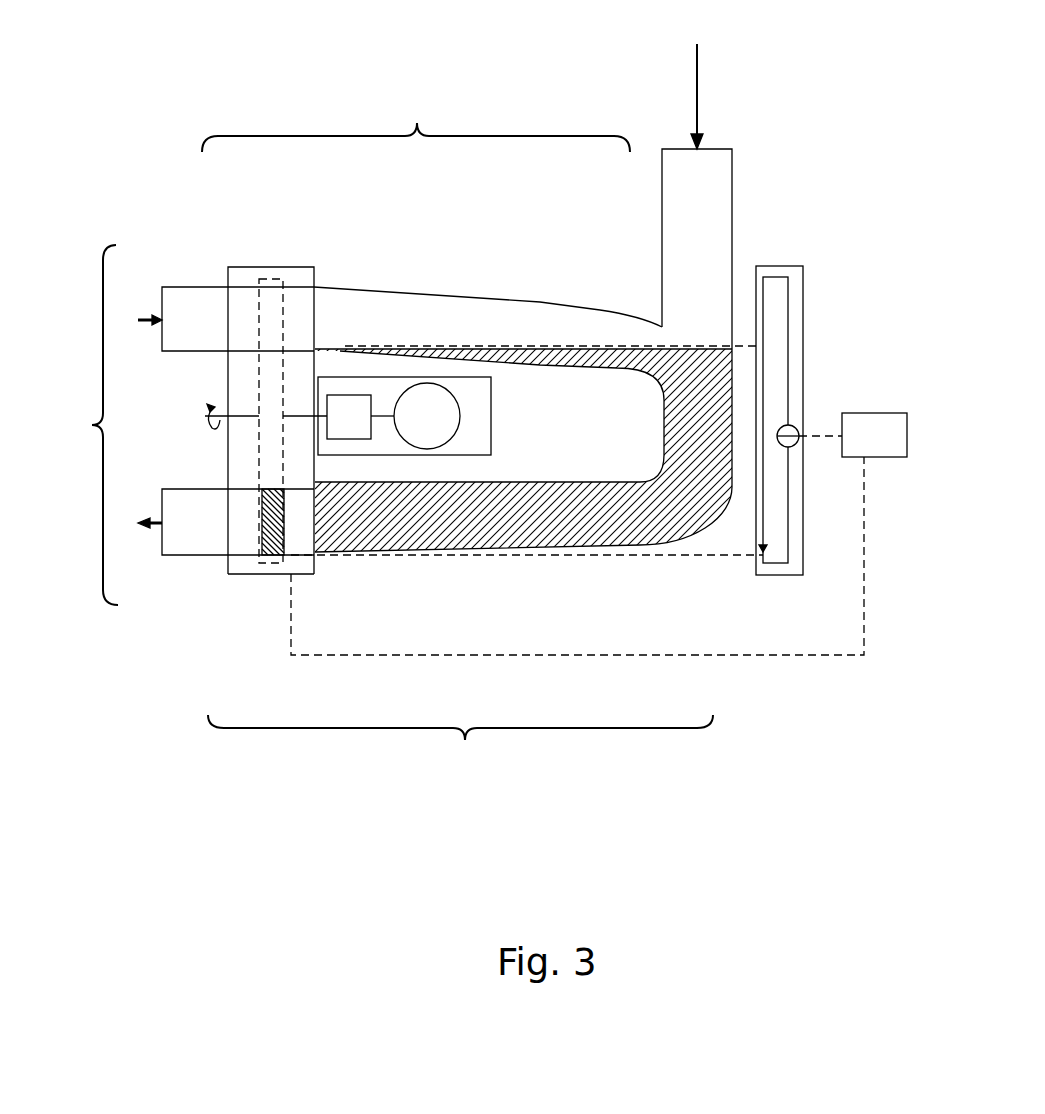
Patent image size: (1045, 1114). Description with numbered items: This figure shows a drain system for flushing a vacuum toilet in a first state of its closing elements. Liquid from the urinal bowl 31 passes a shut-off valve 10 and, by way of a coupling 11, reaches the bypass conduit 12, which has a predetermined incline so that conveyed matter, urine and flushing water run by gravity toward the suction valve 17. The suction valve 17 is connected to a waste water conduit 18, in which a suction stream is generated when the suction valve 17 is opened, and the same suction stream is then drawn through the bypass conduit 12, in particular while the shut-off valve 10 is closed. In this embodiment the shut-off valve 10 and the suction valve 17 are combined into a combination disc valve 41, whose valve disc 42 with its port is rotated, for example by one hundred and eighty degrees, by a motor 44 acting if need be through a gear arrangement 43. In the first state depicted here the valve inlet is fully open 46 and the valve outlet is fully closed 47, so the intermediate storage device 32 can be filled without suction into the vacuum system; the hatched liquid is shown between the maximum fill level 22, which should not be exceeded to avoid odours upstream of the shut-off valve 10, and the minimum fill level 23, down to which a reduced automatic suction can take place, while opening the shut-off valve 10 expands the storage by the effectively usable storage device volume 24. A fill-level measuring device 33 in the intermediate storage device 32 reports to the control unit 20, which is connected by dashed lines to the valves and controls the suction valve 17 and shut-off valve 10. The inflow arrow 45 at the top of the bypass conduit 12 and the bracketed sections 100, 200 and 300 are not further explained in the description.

The shut-off valve 10 is at (318, 270).
The coupling 11 is at (660, 325).
The bypass conduit 12 is at (732, 183).
The suction valve 17 is at (228, 574).
The waste water conduit 18 is at (161, 530).
The control unit 20 is at (880, 457).
The maximum fill level 22 is at (555, 347).
The minimum fill level 23 is at (660, 556).
The effectively usable storage device volume 24 is at (690, 435).
The urinal bowl 31 is at (159, 320).
The intermediate storage device 32 is at (636, 378).
The fill-level measuring device 33 is at (805, 493).
The combination disc valve 41 is at (255, 267).
The valve disc 42 is at (261, 452).
The gear arrangement 43 is at (350, 440).
The motor 44 is at (427, 449).
The feed arrow 45 is at (675, 149).
The fully open valve inlet 46 is at (258, 328).
The fully closed valve outlet 47 is at (262, 528).
The first section 100 is at (82, 425).
The second section 200 is at (416, 123).
The third section 300 is at (460, 742).